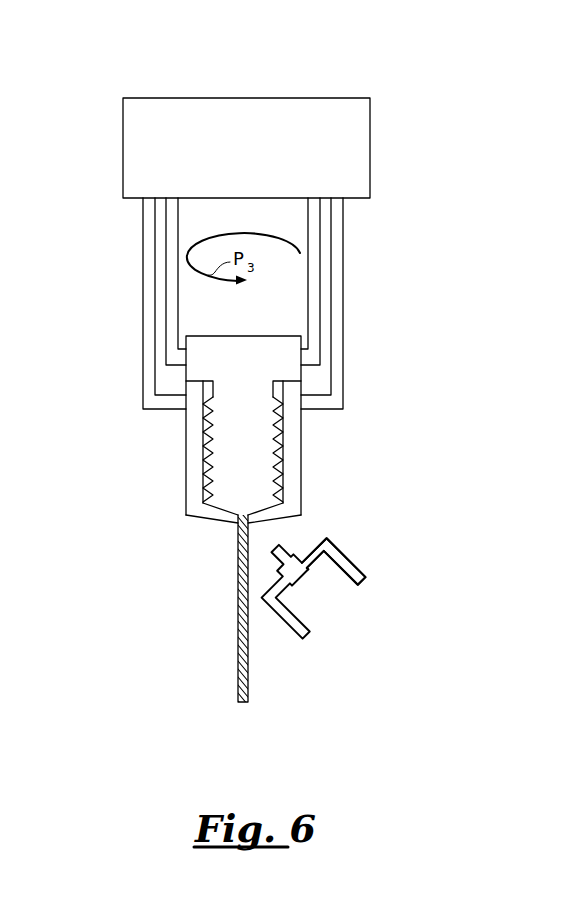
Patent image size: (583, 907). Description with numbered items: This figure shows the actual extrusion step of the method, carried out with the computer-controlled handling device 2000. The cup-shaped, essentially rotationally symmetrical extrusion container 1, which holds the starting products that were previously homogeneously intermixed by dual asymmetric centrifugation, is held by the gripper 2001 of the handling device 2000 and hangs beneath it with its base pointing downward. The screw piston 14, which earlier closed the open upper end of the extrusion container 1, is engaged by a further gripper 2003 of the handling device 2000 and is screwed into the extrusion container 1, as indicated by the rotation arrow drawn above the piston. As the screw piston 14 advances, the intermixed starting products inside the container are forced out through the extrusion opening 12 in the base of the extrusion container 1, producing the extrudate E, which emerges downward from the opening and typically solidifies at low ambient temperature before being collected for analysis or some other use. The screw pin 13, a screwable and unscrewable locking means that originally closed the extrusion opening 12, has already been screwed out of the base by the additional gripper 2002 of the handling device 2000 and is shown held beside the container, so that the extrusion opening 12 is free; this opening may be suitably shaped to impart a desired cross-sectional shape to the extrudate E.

The computer-controlled handling device 2000 is at (240, 110).
The gripper 2001 is at (153, 373).
The further gripper 2003 is at (165, 318).
The extrusion container 1 is at (177, 466).
The screw piston 14 is at (248, 362).
The extrusion opening 12 is at (230, 532).
The extrudate E is at (237, 635).
The screw pin 13 is at (297, 574).
The additional gripper 2002 is at (350, 570).